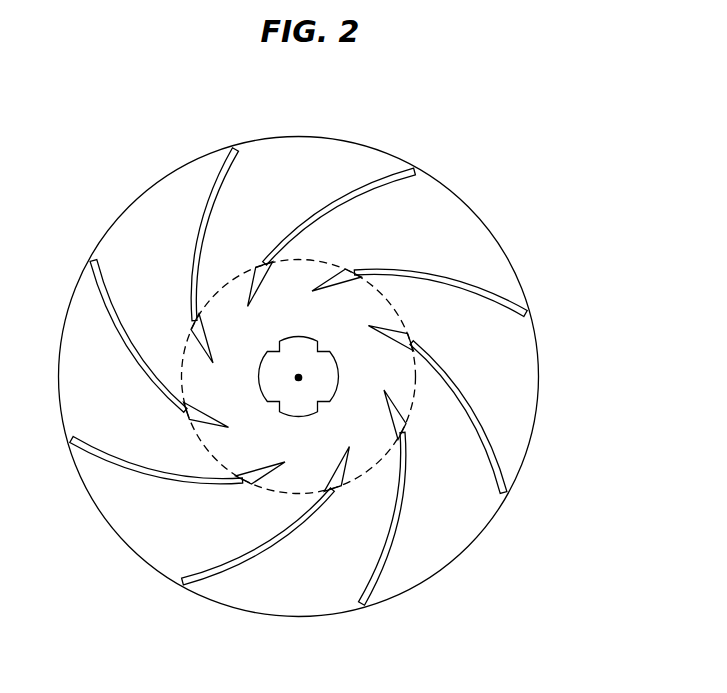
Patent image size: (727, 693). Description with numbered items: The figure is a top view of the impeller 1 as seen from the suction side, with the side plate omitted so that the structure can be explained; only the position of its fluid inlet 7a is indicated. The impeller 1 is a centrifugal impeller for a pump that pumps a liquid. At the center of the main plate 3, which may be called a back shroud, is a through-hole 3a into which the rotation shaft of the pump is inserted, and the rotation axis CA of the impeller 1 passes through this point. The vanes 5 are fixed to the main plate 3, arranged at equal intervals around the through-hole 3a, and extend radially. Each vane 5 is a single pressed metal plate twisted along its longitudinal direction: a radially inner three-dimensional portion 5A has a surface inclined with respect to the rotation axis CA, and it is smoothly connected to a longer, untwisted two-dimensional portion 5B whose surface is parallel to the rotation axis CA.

The impeller 1 is at (100, 193).
The main plate 3 is at (539, 358).
The through-hole 3a is at (305, 417).
The vanes 5 is at (300, 375).
The three-dimensional portion 5A is at (193, 323).
The two-dimensional portion 5B is at (202, 213).
The fluid inlet 7a is at (356, 296).
The rotation axis CA is at (298, 367).